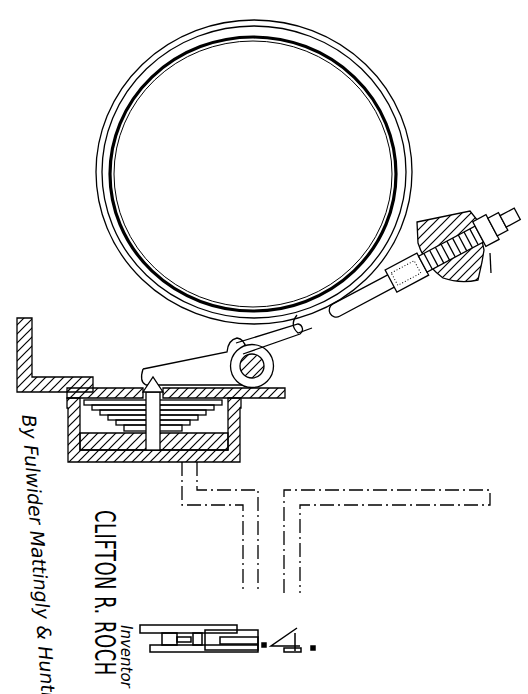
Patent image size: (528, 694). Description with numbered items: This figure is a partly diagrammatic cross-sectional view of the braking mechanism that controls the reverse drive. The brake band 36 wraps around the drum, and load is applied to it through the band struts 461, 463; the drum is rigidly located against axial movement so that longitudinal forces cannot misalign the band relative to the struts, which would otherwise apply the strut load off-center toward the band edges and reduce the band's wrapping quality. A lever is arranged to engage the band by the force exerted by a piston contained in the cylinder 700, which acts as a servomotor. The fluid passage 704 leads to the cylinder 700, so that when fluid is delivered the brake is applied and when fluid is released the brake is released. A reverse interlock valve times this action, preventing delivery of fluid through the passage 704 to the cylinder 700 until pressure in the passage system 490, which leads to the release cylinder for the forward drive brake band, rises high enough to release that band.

The brake band 36 is at (408, 140).
The band strut 461 is at (283, 338).
The band strut 463 is at (372, 293).
The cylinder 700 is at (240, 420).
The fluid passage 704 is at (238, 500).
The passage system 490 is at (390, 500).